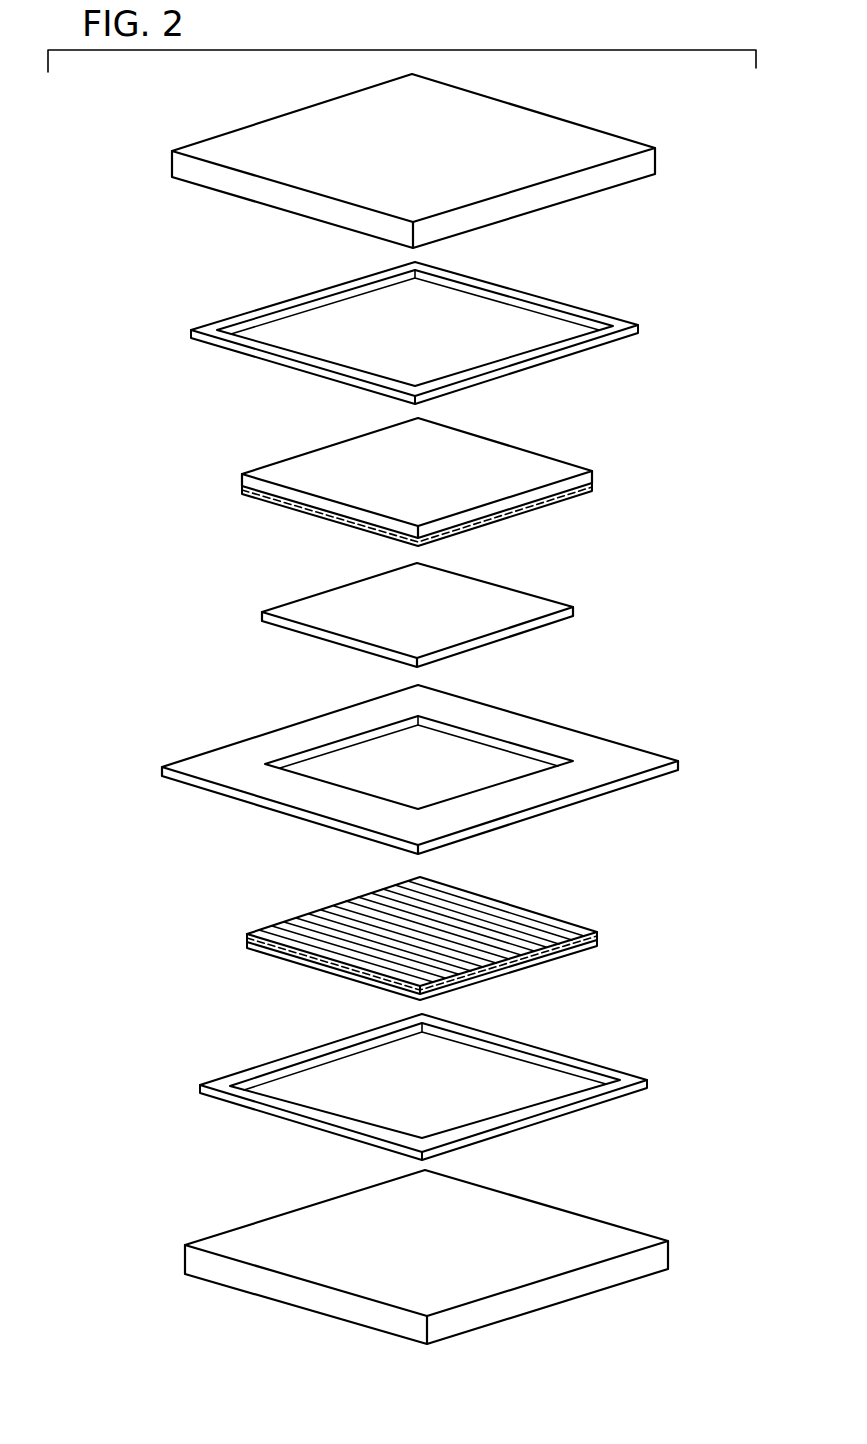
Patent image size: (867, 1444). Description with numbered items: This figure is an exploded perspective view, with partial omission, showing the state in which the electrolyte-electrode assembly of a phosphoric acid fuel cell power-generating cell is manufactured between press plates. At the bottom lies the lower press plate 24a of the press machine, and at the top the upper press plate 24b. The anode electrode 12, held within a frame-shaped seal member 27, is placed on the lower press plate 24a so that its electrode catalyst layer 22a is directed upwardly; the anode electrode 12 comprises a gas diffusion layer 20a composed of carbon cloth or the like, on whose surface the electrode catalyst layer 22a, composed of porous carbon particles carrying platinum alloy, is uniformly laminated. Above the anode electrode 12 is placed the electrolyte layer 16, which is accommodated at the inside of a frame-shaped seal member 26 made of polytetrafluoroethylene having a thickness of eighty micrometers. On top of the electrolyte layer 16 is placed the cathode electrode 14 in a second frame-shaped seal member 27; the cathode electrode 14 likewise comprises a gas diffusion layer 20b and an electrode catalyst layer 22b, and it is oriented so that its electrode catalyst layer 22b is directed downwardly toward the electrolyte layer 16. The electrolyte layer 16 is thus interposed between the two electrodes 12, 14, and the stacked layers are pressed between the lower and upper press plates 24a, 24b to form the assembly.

The anode electrode 12 is at (445, 936).
The cathode electrode 14 is at (430, 480).
The electrolyte layer 16 is at (282, 605).
The gas diffusion layer 20a is at (565, 955).
The gas diffusion layer 20b is at (553, 466).
The electrode catalyst layer 22a is at (565, 925).
The electrode catalyst layer 22b is at (555, 495).
The lower press plate 24a is at (657, 1255).
The upper press plate 24b is at (647, 158).
The frame-shaped seal member 26 is at (224, 748).
The frame-shaped seal member 27 is at (276, 293).